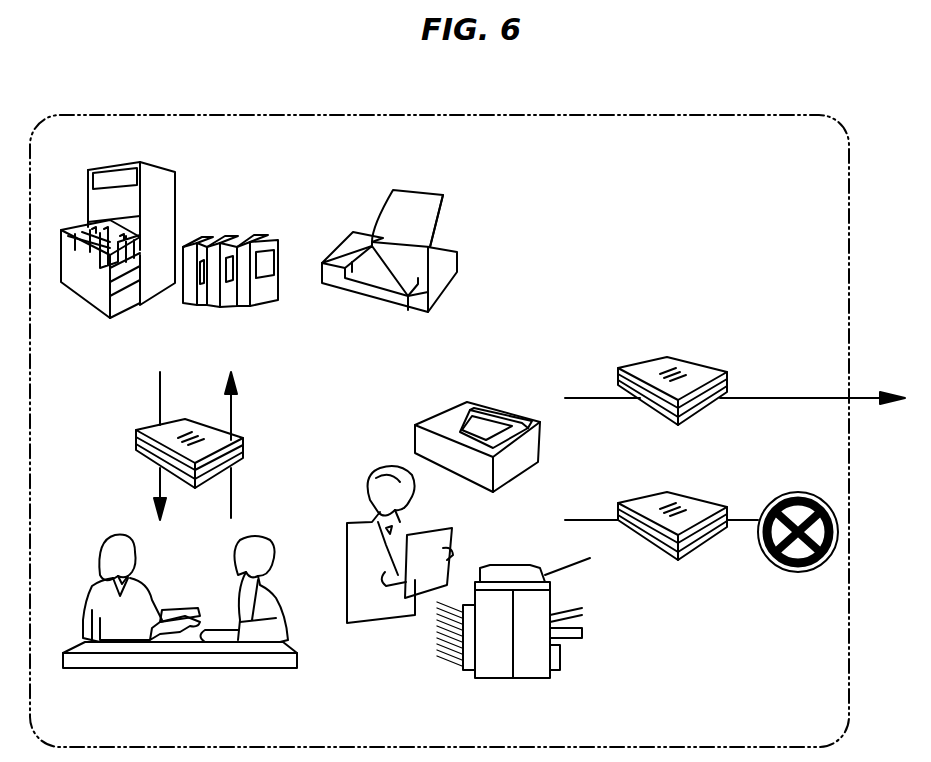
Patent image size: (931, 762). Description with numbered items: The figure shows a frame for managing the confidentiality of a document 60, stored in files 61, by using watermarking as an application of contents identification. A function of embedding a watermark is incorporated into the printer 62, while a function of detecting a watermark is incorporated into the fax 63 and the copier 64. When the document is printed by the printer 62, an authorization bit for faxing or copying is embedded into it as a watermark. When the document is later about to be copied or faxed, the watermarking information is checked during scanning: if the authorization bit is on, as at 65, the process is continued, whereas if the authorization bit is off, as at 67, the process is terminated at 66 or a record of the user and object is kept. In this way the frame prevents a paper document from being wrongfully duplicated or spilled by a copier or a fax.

The document 60 is at (237, 432).
The files 61 is at (216, 194).
The printer 62 is at (389, 280).
The fax 63 is at (477, 475).
The copier 64 is at (513, 645).
The authorization bit on 65 is at (735, 367).
The process termination 66 is at (782, 560).
The authorization bit off 67 is at (669, 502).